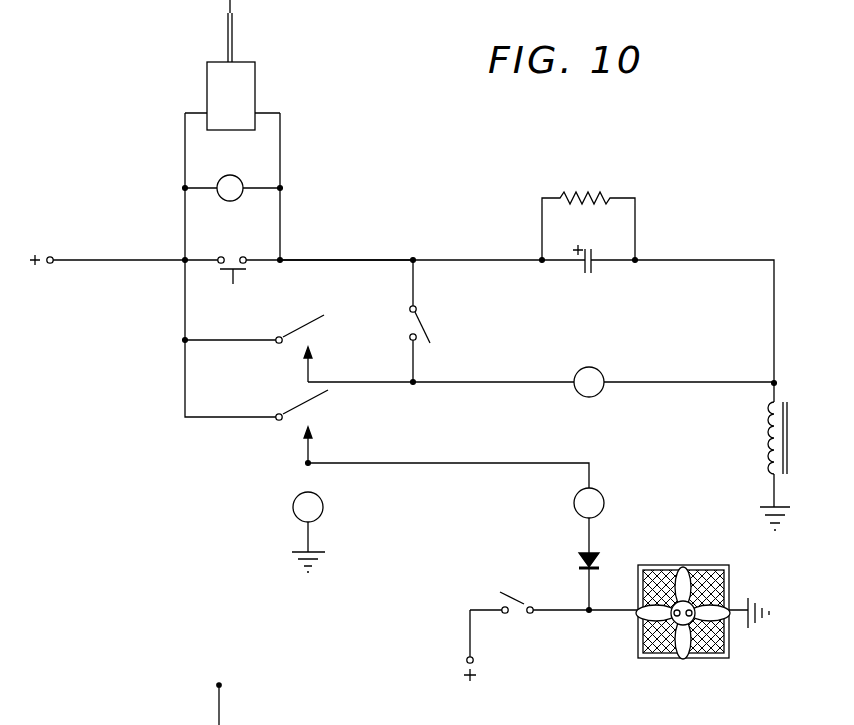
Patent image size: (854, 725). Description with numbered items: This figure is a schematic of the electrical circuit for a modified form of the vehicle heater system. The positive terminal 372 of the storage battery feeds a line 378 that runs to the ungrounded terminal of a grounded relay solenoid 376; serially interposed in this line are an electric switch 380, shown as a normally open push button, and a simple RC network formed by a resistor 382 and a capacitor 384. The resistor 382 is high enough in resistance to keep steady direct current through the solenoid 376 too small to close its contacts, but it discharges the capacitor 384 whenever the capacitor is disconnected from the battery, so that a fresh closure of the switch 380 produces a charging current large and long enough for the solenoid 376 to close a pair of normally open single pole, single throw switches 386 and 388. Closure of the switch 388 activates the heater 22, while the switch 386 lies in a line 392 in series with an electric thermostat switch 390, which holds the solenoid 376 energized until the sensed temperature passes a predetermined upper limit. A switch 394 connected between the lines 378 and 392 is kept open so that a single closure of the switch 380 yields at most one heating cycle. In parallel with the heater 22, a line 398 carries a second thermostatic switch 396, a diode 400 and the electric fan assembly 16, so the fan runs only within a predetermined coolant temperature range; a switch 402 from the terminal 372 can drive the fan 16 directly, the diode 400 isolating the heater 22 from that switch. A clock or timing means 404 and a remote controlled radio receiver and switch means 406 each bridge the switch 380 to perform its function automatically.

The heater and electric fan assembly 16 is at (732, 592).
The heater 22 is at (295, 513).
The positive terminal 372 is at (54, 258).
The relay solenoid 376 is at (778, 435).
The line 378 is at (383, 260).
The electric switch 380 is at (221, 271).
The resistor 382 is at (597, 197).
The capacitor 384 is at (584, 264).
The single pole, single throw switch 386 is at (301, 325).
The single pole, single throw switch 388 is at (298, 405).
The electric thermostat switch 390 is at (600, 371).
The line 392 is at (480, 382).
The switch 394 is at (425, 328).
The thermostatic switch 396 is at (602, 494).
The line 398 is at (455, 463).
The diode 400 is at (600, 552).
The switch 402 is at (517, 597).
The clock or timing means 404 is at (245, 177).
The remote controlled radio receiver and switch means 406 is at (258, 72).